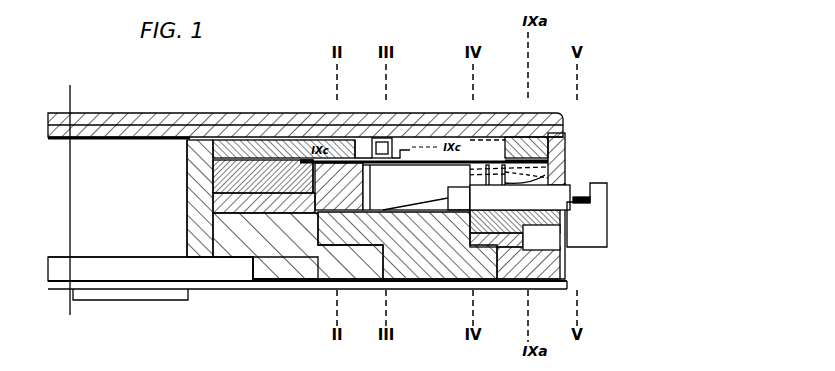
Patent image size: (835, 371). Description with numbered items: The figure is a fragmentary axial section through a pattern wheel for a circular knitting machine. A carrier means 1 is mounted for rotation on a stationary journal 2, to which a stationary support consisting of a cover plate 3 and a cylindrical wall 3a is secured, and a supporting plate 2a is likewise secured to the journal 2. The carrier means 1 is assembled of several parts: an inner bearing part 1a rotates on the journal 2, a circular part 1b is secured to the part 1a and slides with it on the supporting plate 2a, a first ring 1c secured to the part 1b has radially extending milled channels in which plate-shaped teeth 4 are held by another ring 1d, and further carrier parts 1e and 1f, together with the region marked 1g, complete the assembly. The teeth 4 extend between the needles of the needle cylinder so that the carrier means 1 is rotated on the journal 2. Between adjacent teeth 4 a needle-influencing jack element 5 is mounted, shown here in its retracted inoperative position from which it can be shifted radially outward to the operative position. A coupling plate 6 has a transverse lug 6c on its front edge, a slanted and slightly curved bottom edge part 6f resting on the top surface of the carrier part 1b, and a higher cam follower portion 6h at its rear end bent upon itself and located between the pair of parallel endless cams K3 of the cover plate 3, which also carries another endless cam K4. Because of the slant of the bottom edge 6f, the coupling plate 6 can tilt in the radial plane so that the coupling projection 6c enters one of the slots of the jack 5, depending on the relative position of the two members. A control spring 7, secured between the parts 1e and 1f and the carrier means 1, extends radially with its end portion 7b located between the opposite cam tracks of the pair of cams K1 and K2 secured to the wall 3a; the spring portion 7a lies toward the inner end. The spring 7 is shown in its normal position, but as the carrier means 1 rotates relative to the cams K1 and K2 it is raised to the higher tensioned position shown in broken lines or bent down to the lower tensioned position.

The carrier means 1 is at (224, 248).
The inner bearing part 1a is at (281, 266).
The circular part 1b is at (437, 258).
The first ring 1c is at (501, 250).
The another ring 1d is at (545, 214).
The carrier part 1e is at (224, 205).
The carrier part 1f is at (224, 176).
The body layer 1g is at (233, 148).
The stationary journal 2 is at (127, 247).
The supporting plate 2a is at (148, 290).
The cover plate 3 is at (105, 122).
The cylindrical wall 3a is at (564, 141).
The plate-shaped teeth 4 is at (602, 221).
The needle-influencing jack element 5 is at (583, 197).
The coupling plate 6 is at (393, 196).
The transverse lug 6c is at (520, 197).
The slanted bottom edge part 6f is at (426, 198).
The cam follower portion 6h is at (385, 143).
The control spring 7 is at (422, 162).
The foil end 7a is at (300, 160).
The end portion of control spring 7b is at (530, 150).
The cam K1 is at (540, 168).
The cam K2 is at (563, 131).
The endless cams K3 is at (380, 140).
The endless cam K4 is at (497, 122).